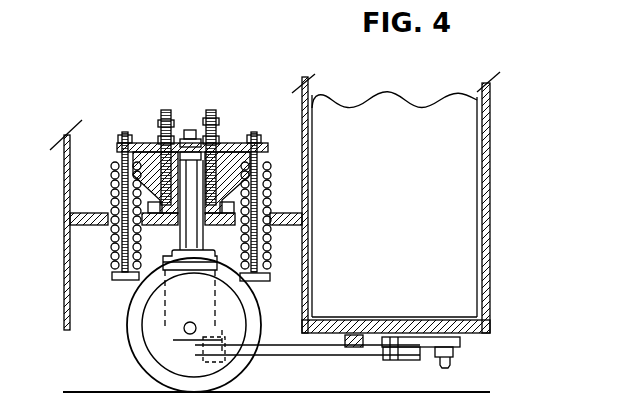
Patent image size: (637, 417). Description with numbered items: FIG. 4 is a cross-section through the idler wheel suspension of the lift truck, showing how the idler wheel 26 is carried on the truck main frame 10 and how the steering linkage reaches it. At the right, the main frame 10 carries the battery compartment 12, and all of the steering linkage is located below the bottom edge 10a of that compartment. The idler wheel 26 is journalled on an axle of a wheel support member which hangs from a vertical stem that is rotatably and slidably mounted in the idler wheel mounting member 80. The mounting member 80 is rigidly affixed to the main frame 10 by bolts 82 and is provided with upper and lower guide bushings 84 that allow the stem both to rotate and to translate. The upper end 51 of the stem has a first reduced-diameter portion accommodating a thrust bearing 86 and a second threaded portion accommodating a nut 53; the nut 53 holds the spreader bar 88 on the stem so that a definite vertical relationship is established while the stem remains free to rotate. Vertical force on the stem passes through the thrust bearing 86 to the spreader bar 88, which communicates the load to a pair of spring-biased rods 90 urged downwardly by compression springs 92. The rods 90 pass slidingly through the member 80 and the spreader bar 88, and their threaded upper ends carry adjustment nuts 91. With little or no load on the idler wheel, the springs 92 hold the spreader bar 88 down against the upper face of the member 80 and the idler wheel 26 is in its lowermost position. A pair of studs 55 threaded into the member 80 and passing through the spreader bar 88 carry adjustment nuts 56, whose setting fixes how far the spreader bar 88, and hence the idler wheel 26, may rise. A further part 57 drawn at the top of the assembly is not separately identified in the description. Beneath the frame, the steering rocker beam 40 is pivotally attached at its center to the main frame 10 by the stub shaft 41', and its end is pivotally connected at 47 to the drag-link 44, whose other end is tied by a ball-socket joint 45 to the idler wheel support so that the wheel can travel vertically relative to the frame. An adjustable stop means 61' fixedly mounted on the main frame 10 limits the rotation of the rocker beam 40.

The main frame 10 is at (65, 206).
The bottom edge of battery compartment 10a is at (306, 334).
The battery compartment 12 is at (392, 262).
The idler wheel 26 is at (116, 331).
The steering rocker beam 40 is at (438, 350).
The stub shaft 41' is at (447, 374).
The drag-link 44 is at (283, 355).
The ball-socket joint 45 is at (226, 356).
The pivotal connection 47 is at (400, 360).
The upper end of stem 51 is at (181, 128).
The nut 53 is at (188, 130).
The studs 55 is at (158, 128).
The adjustment nuts 56 is at (232, 125).
The bolt 57 is at (164, 110).
The adjustable stop means 61' is at (348, 360).
The idler wheel mounting member 80 is at (191, 182).
The bolts 82 is at (156, 214).
The guide bushings 84 is at (190, 215).
The thrust bearing 86 is at (211, 110).
The spreader bar 88 is at (226, 142).
The spring-biased rods 90 is at (125, 132).
The adjustment nuts 91 is at (118, 138).
The compression springs 92 is at (112, 190).